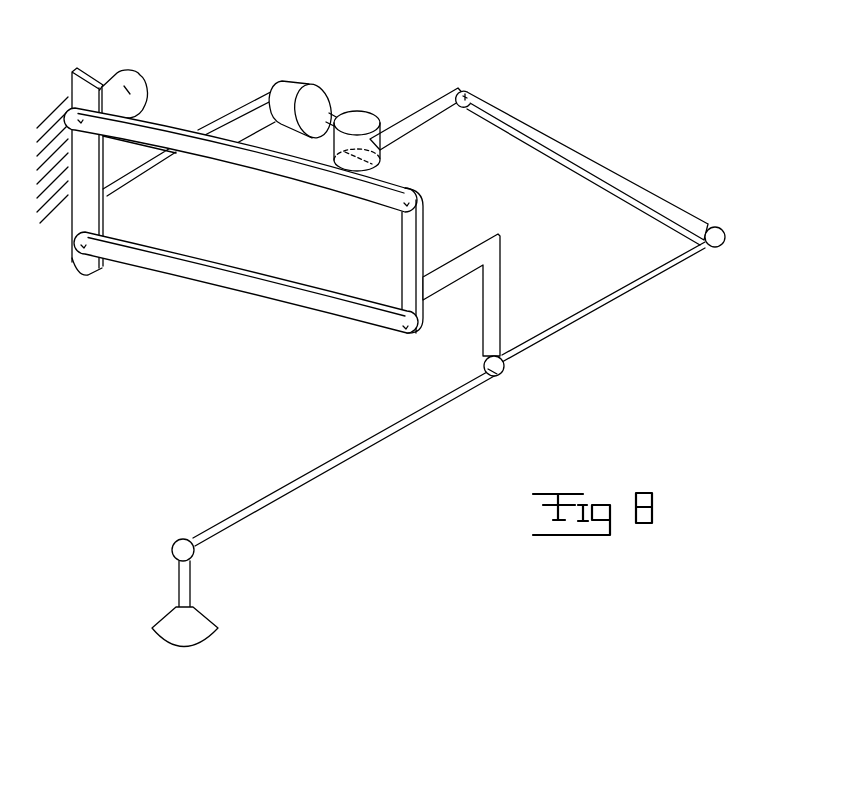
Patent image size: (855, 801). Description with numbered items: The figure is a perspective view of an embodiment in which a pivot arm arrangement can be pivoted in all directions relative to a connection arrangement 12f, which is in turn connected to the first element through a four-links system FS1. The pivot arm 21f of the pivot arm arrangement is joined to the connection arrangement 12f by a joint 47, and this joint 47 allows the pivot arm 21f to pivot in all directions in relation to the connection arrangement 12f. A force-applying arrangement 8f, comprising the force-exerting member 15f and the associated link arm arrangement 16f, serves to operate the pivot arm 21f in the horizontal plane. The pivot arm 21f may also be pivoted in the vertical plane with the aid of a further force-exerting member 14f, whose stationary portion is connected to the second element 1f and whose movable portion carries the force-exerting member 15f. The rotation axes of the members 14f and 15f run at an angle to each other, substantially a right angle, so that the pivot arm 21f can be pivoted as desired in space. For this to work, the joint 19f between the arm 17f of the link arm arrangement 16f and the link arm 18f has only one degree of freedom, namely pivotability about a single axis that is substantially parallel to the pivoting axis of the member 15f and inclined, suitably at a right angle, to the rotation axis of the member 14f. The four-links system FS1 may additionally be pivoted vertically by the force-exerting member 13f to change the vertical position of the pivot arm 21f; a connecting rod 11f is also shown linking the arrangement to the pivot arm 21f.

The second element 1f is at (230, 225).
The force-applying arrangement 8f is at (438, 336).
The connecting rod 11f is at (565, 353).
The connection arrangement 12f is at (458, 262).
The force-exerting member 13f is at (132, 92).
The force-exerting member 14f is at (300, 100).
The force-exerting member 15f is at (363, 122).
The link arm arrangement 16f is at (660, 183).
The arm 17f is at (416, 128).
The link arm 18f is at (587, 165).
The joint 19f is at (465, 82).
The pivot arm 21f is at (412, 413).
The joint 47 is at (496, 378).
The four-links system FS1 is at (233, 330).